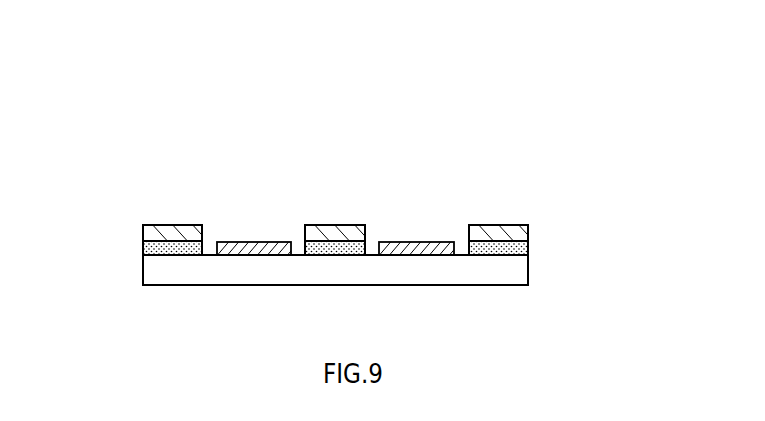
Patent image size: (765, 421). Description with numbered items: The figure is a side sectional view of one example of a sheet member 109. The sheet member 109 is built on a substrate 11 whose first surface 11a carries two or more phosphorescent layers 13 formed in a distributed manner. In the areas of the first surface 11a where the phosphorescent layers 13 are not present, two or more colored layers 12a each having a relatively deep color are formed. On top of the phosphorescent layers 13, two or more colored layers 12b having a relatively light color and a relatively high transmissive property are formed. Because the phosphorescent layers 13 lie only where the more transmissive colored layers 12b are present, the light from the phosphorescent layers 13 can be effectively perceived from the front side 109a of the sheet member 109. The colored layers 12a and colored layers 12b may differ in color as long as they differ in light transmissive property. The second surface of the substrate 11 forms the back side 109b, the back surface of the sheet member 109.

The sheet member 109 is at (147, 125).
The front side 109a is at (387, 254).
The back side 109b is at (430, 288).
The substrate 11 is at (529, 271).
The first surface 11a is at (528, 232).
The colored layer 12a is at (270, 241).
The colored layer 12b is at (170, 226).
The phosphorescent layer 13 is at (160, 250).